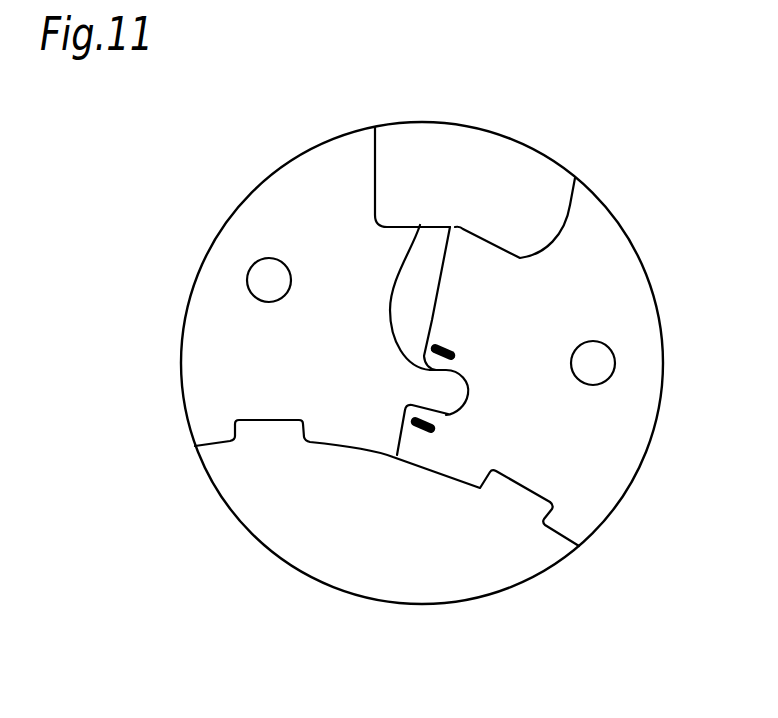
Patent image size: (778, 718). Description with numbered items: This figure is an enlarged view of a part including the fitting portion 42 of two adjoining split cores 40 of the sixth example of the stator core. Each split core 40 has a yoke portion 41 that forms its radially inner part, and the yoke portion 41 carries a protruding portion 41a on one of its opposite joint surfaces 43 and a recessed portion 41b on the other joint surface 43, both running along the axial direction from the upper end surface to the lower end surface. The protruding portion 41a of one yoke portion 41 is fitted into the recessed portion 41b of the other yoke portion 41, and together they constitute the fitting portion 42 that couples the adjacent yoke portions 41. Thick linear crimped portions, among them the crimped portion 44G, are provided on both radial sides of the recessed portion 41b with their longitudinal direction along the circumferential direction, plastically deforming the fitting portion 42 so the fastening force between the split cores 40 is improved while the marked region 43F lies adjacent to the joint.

The split core 40 is at (272, 207).
The yoke portion 41 is at (220, 305).
The protruding portion 41a is at (445, 392).
The recessed portion 41b is at (420, 225).
The fitting portion 42 is at (478, 418).
The joint surface 43 is at (438, 290).
The groove end 43F is at (417, 440).
The crimped portion 44G is at (453, 347).